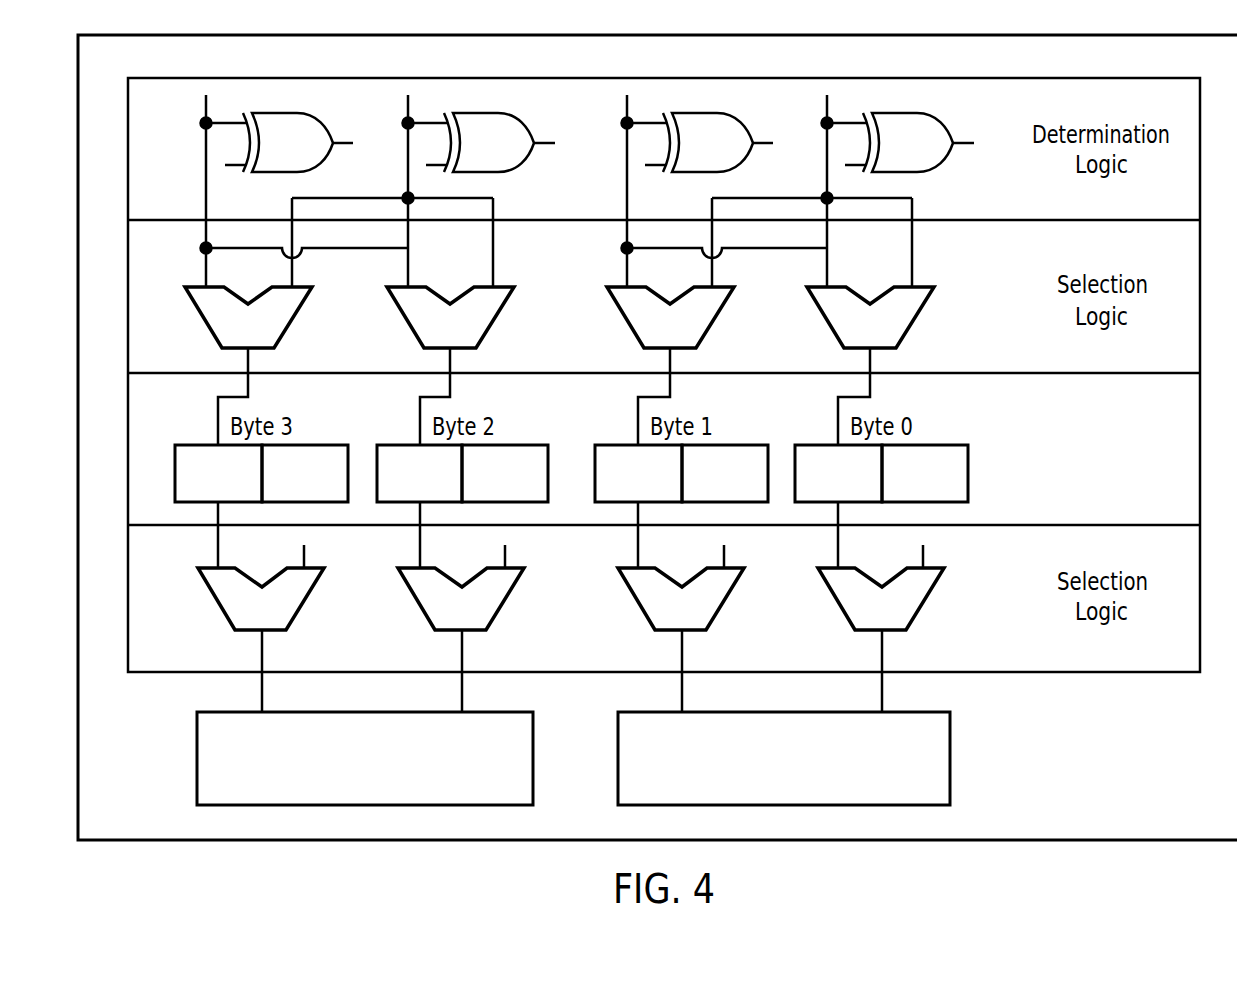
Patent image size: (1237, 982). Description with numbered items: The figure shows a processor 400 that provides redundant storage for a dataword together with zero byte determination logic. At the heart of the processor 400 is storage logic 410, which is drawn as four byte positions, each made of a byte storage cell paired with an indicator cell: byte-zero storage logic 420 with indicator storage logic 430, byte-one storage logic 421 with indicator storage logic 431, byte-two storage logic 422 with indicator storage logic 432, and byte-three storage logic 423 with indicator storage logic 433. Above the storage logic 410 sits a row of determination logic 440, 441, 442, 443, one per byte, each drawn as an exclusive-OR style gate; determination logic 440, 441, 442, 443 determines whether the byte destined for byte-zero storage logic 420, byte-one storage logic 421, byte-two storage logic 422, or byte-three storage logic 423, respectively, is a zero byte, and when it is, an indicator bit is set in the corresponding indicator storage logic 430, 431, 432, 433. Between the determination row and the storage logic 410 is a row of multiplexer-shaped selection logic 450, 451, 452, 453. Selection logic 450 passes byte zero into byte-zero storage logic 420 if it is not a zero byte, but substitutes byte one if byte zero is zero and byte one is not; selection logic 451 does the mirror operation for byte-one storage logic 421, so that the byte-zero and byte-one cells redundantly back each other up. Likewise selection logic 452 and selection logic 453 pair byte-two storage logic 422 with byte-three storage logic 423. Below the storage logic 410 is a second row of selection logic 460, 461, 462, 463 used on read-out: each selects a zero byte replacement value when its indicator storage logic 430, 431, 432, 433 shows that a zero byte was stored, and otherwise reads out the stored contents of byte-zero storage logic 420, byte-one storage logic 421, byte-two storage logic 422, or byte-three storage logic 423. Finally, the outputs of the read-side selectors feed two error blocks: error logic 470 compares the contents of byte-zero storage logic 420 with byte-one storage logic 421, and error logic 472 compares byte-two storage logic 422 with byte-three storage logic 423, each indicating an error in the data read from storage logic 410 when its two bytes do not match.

The processor 400 is at (990, 841).
The storage logic 410 is at (1122, 497).
The byte-0 storage logic 420 is at (857, 487).
The byte-1 storage logic 421 is at (657, 487).
The byte-2 storage logic 422 is at (439, 487).
The byte-3 storage logic 423 is at (237, 487).
The indicator storage logic 430 is at (944, 487).
The indicator storage logic 431 is at (744, 487).
The indicator storage logic 432 is at (524, 487).
The indicator storage logic 433 is at (324, 487).
The determination logic 440 is at (928, 155).
The determination logic 441 is at (728, 155).
The determination logic 442 is at (509, 155).
The determination logic 443 is at (308, 155).
The selection logic 450 is at (890, 338).
The selection logic 451 is at (690, 338).
The selection logic 452 is at (470, 338).
The selection logic 453 is at (268, 338).
The selection logic 460 is at (902, 619).
The selection logic 461 is at (702, 619).
The selection logic 462 is at (482, 619).
The selection logic 463 is at (282, 619).
The error logic 470 is at (803, 792).
The error logic 472 is at (383, 792).